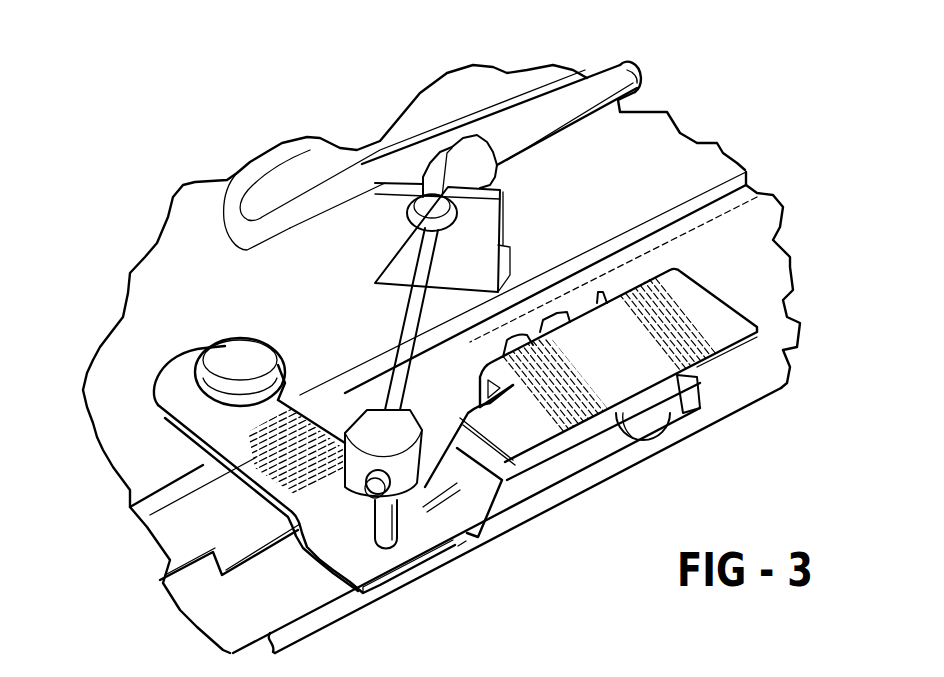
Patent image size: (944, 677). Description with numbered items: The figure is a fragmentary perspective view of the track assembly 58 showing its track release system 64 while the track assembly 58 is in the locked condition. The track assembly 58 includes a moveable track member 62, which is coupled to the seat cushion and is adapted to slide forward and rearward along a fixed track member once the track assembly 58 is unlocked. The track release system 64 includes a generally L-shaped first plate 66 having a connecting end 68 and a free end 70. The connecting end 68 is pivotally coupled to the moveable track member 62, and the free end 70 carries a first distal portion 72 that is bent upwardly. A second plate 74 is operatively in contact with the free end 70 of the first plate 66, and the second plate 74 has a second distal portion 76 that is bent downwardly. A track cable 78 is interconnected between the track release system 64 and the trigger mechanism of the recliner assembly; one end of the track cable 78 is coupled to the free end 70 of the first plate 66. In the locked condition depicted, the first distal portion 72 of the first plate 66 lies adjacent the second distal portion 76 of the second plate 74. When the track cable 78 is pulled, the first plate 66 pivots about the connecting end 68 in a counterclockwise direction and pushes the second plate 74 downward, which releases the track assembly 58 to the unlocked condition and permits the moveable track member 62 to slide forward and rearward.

The track assembly 58 is at (670, 92).
The moveable track member 62 is at (695, 173).
The track release system 64 is at (468, 538).
The first plate 66 is at (252, 458).
The connecting end 68 is at (176, 398).
The free end 70 is at (418, 537).
The first distal portion 72 is at (470, 492).
The second plate 74 is at (632, 375).
The second distal portion 76 is at (523, 450).
The track cable 78 is at (420, 270).